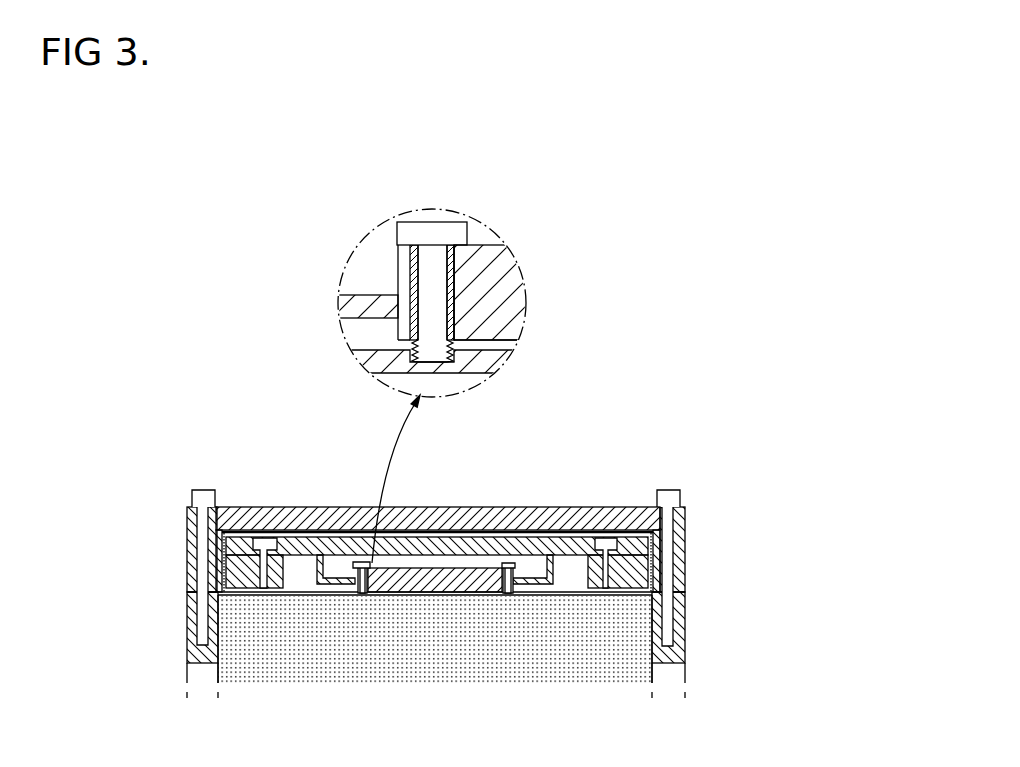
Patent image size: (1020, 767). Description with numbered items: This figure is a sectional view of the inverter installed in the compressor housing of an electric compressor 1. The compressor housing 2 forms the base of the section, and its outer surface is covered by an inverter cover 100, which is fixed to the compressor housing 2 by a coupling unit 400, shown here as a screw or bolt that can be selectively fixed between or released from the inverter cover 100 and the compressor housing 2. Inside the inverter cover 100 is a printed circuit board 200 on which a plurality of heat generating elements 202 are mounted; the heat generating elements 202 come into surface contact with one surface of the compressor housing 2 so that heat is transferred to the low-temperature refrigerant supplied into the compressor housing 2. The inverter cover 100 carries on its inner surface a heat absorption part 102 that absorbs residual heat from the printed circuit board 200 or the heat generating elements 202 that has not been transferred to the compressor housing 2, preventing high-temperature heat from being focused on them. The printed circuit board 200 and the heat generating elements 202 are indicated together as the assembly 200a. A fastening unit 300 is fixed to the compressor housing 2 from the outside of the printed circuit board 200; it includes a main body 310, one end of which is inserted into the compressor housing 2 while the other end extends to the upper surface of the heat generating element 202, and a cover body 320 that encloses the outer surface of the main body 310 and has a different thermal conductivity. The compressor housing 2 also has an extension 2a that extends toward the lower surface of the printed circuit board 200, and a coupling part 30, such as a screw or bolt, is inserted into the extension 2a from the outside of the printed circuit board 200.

The electric compressor 1 is at (202, 410).
The compressor housing 2 is at (695, 619).
The extension 2a is at (578, 568).
The coupling part 30 is at (262, 538).
The inverter cover 100 is at (485, 492).
The heat absorption part 102 is at (660, 556).
The printed circuit board 200 is at (491, 545).
The plate assembly 200a is at (457, 448).
The heat generating element 202 is at (433, 567).
The fastening unit 300 is at (390, 347).
The main body 310 is at (363, 562).
The cover body 320 is at (357, 567).
The coupling unit 400 is at (684, 482).